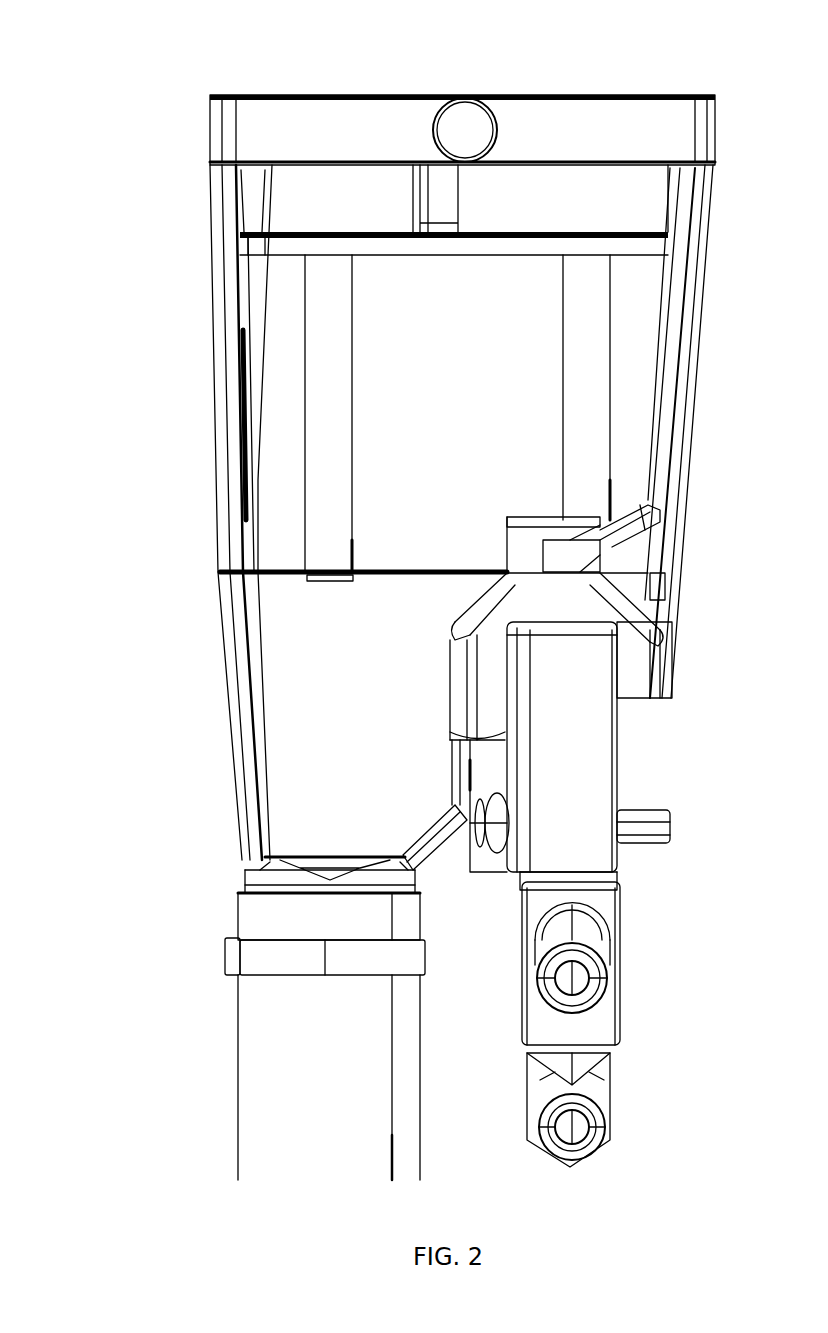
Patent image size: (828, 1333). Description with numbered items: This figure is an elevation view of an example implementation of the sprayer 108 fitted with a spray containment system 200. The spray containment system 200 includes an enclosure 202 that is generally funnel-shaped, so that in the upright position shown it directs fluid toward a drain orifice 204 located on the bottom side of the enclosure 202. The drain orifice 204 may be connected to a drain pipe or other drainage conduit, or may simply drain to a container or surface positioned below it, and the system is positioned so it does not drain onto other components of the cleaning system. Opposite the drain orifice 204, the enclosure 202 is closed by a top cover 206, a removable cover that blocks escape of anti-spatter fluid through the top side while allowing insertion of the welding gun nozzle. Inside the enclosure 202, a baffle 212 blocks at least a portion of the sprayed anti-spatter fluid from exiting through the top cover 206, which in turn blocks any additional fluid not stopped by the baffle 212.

The sprayer 108 is at (88, 16).
The spray containment system 200 is at (178, 112).
The enclosure 202 is at (210, 228).
The drain orifice 204 is at (348, 830).
The top cover 206 is at (364, 82).
The baffle 212 is at (372, 232).